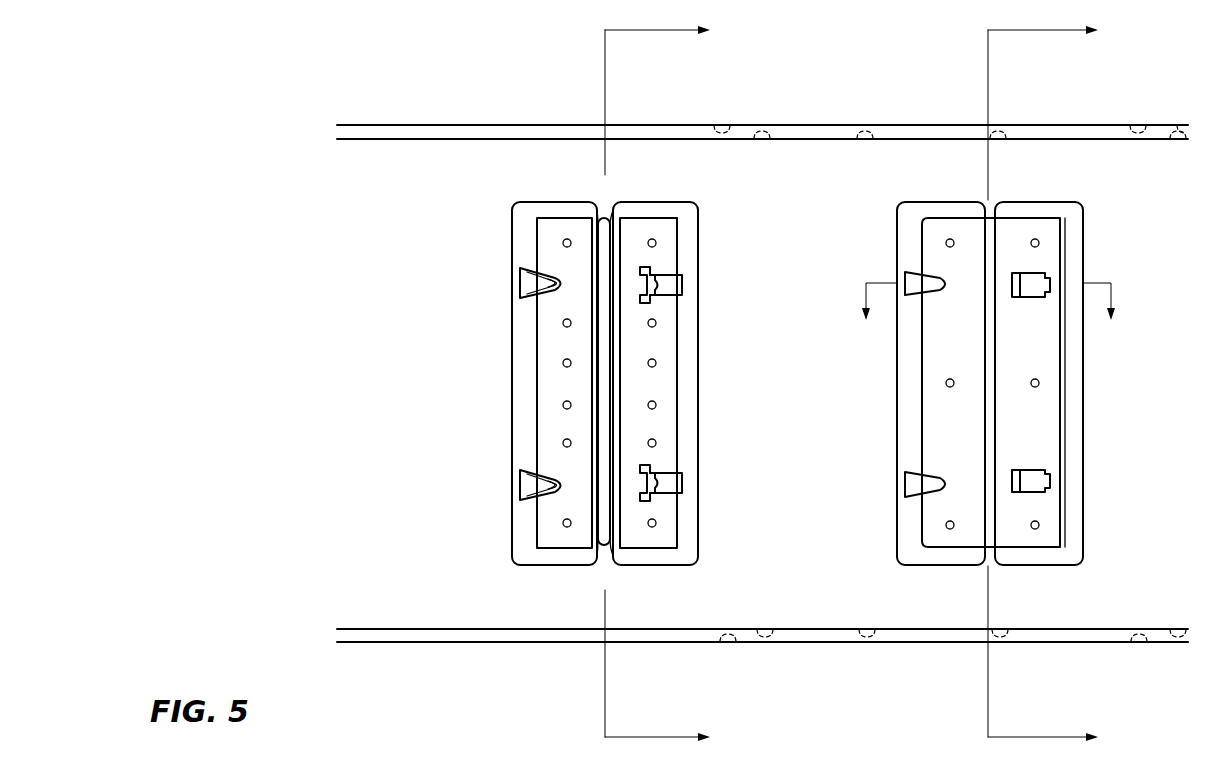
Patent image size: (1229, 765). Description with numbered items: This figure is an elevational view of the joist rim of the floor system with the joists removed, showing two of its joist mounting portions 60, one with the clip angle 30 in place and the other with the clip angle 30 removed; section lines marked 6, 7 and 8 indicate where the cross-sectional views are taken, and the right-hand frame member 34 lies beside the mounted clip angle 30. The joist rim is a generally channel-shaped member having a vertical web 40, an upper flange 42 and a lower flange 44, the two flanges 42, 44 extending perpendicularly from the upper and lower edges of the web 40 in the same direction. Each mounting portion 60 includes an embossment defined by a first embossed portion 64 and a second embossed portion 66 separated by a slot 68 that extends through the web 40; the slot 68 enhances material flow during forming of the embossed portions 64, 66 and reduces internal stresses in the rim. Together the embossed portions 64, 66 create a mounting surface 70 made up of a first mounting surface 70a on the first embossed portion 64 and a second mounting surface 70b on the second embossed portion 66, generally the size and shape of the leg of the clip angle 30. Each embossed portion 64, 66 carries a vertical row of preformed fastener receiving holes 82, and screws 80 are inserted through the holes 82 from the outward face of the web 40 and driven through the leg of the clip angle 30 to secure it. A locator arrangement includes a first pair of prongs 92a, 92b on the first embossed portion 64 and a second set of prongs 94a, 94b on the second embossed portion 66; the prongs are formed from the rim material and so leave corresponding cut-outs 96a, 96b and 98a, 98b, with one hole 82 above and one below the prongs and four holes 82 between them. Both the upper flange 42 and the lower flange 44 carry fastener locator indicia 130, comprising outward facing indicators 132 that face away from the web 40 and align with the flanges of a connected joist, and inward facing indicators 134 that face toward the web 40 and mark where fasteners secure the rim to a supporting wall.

The clip angle 30 is at (1088, 489).
The frame member 34 is at (1083, 433).
The web portion 40 is at (412, 301).
The upper flange 42 is at (360, 126).
The lower flange 44 is at (360, 643).
The mounting portion 60 is at (500, 270).
The first embossed portion 64 is at (528, 408).
The second embossed portion 66 is at (688, 395).
The slot 68 is at (606, 200).
The mounting surface 70 is at (544, 343).
The first mounting surface 70a is at (542, 306).
The second mounting surface 70b is at (663, 345).
The screws 80 is at (1030, 243).
The fastener receiving holes 82 is at (563, 244).
The first prong 92a is at (560, 267).
The second prong 92b is at (548, 489).
The first prong of second set 94a is at (658, 272).
The second prong of second set 94b is at (660, 494).
The cut-out 96a is at (551, 288).
The cut-out 96b is at (556, 469).
The cut-out 98a is at (683, 285).
The cut-out 98b is at (683, 481).
The fastener locator indicia 130 is at (706, 655).
The outward facing indicator 132 is at (718, 126).
The inward facing indicator 134 is at (762, 141).
The section line 6 is at (665, 392).
The section line 7 is at (1050, 392).
The section line 8 is at (986, 316).